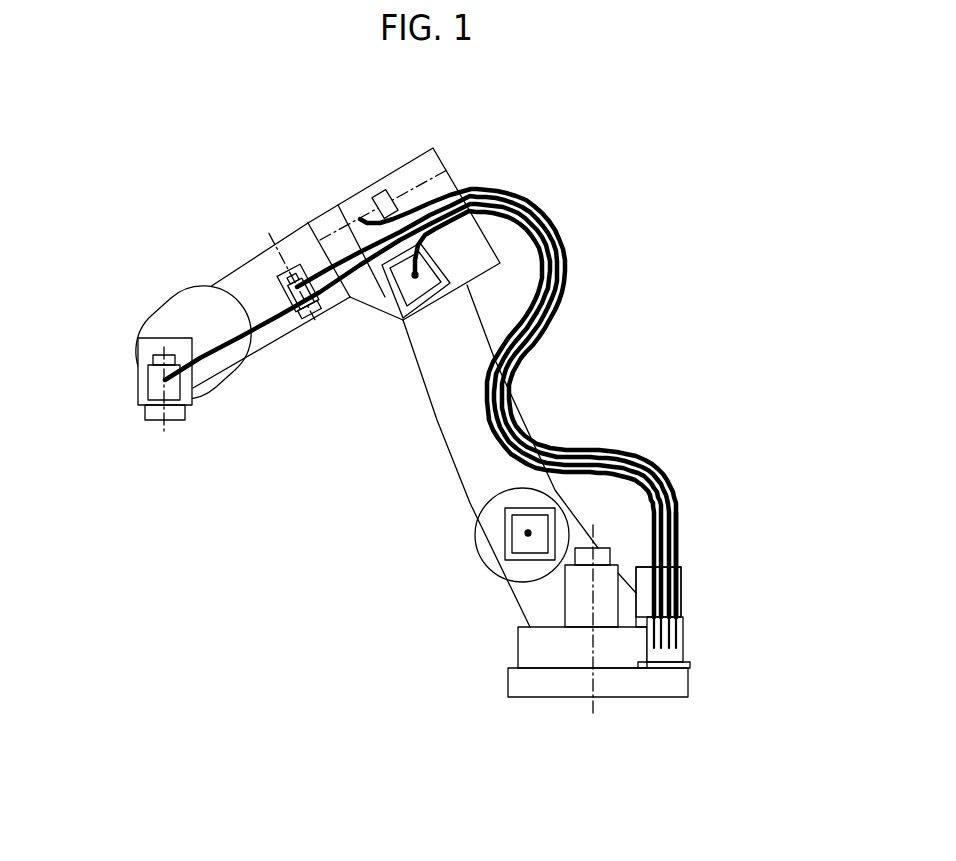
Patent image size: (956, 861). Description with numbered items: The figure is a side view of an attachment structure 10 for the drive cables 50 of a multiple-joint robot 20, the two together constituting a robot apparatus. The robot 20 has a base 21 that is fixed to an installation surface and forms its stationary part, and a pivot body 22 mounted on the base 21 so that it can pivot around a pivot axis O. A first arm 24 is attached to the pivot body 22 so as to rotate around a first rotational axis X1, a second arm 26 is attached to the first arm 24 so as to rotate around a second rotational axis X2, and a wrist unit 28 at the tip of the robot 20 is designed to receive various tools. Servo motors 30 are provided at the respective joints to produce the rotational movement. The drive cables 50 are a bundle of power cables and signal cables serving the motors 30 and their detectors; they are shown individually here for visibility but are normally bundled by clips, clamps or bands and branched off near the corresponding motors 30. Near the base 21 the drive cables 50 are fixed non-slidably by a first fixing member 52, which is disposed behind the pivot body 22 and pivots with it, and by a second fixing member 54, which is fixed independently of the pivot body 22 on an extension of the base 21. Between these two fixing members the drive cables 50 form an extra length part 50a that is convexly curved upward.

The attachment structure 10 is at (702, 538).
The robot 20 is at (357, 430).
The base 21 is at (508, 687).
The pivot body 22 is at (512, 584).
The first arm 24 is at (425, 374).
The second arm 26 is at (314, 216).
The wrist unit 28 is at (128, 425).
The motor 30 is at (138, 378).
The drive cables 50 is at (568, 468).
The extra length part 50a is at (686, 519).
The first fixing member 52 is at (681, 578).
The second fixing member 54 is at (682, 656).
The first rotational axis X1 is at (528, 538).
The second rotational axis X2 is at (418, 282).
The pivot axis O is at (593, 703).